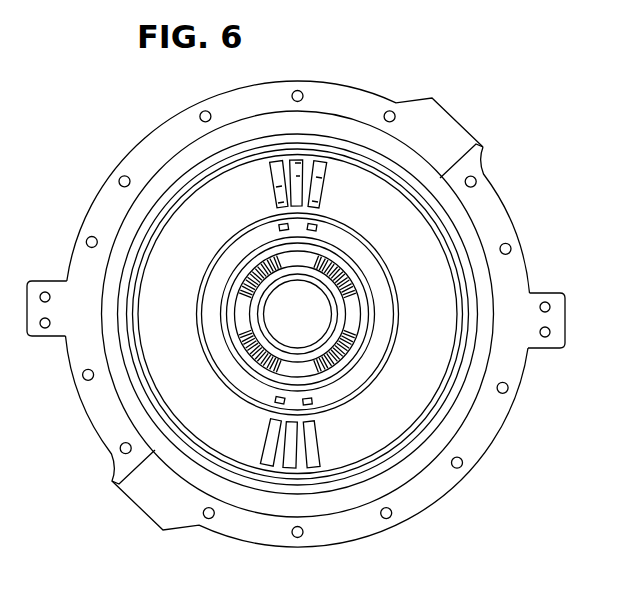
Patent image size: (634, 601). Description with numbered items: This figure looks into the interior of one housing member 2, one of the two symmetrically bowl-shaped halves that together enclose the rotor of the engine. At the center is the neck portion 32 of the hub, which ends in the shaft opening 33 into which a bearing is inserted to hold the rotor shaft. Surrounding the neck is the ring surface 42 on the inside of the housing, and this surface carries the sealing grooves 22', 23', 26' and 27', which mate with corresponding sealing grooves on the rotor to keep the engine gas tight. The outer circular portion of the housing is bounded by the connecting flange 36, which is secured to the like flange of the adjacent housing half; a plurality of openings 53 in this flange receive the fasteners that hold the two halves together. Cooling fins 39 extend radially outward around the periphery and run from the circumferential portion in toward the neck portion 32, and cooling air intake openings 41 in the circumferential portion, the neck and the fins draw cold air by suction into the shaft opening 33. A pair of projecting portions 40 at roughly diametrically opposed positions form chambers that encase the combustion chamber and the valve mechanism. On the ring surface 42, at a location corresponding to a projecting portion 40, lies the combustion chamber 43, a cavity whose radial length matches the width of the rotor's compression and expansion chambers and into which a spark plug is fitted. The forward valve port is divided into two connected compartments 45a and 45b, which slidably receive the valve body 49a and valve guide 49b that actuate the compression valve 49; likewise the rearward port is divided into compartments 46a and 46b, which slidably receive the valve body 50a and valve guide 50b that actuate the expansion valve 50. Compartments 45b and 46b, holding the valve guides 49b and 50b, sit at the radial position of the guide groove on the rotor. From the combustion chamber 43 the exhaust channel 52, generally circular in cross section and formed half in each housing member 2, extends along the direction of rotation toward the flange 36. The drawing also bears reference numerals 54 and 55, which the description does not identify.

The housing member 2 is at (165, 110).
The sealing groove 22' is at (264, 314).
The sealing groove 23' is at (251, 314).
The sealing groove 26' is at (278, 314).
The sealing groove 27' is at (266, 314).
The neck portion 32 is at (252, 326).
The opening 33 is at (279, 329).
The connecting flange 36 is at (490, 212).
The cooling fins 39 is at (358, 311).
The projecting portion 40 is at (287, 367).
The cooling air intake openings 41 is at (355, 340).
The ring surface 42 is at (428, 382).
The combustion chamber 43 is at (301, 176).
The compartment 45a is at (323, 197).
The compartment 45b is at (350, 238).
The compartment 46a is at (278, 200).
The compartment 46b is at (231, 243).
The compression valve 49 is at (333, 168).
The valve body 49a is at (323, 174).
The valve guide 49b is at (315, 224).
The expansion valve 50 is at (266, 168).
The valve body 50a is at (278, 184).
The valve guide 50b is at (280, 229).
The exhaust channel 52 is at (450, 132).
The openings 53 is at (510, 250).
The mounting tab 54 is at (563, 320).
The tab hole 55 is at (547, 337).